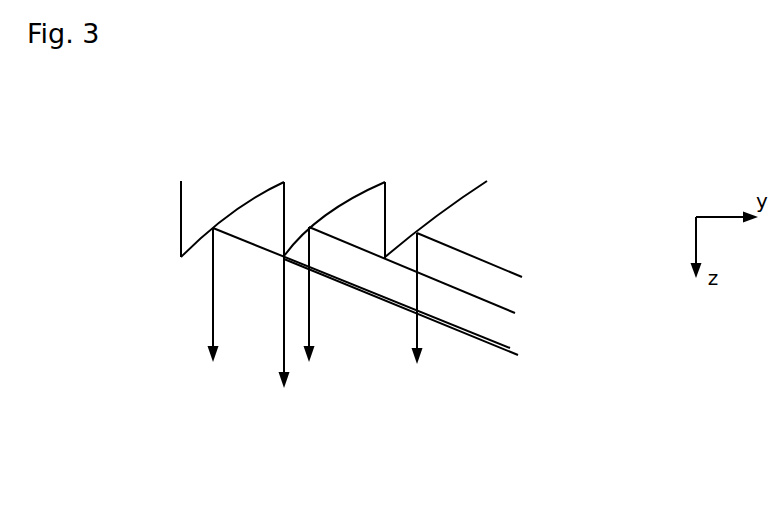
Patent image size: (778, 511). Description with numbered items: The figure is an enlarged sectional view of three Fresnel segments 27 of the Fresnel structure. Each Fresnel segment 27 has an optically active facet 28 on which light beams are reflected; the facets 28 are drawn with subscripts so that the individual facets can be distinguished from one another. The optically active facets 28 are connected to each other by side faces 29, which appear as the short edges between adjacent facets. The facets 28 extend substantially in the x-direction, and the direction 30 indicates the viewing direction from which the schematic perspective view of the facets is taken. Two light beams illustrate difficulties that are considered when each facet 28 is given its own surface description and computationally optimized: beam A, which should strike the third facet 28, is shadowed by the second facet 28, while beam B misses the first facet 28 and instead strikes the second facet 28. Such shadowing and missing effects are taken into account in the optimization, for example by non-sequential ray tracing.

The Fresnel segment 27 is at (219, 200).
The optically active facet 28 is at (345, 222).
The side face 29 is at (181, 210).
The direction 30 is at (375, 386).
The beam A is at (511, 353).
The beam B is at (498, 306).